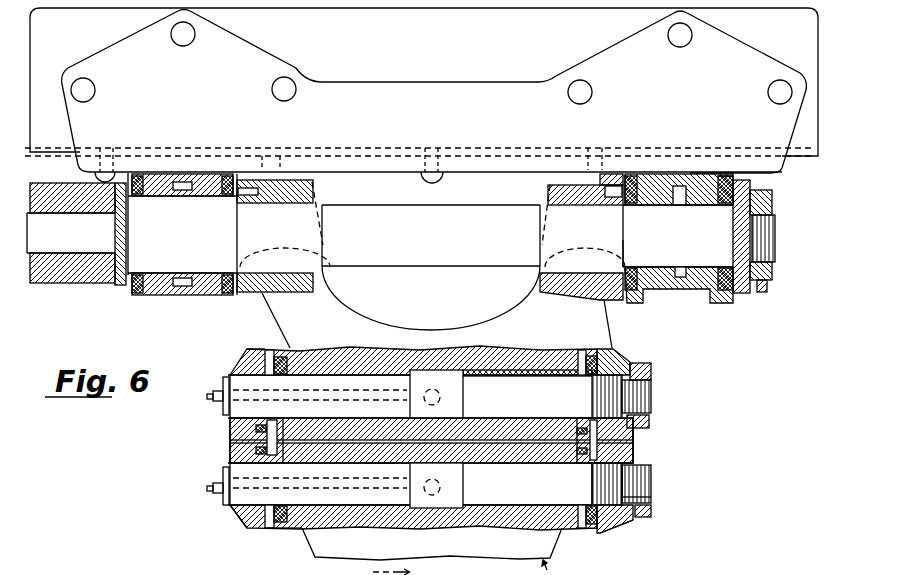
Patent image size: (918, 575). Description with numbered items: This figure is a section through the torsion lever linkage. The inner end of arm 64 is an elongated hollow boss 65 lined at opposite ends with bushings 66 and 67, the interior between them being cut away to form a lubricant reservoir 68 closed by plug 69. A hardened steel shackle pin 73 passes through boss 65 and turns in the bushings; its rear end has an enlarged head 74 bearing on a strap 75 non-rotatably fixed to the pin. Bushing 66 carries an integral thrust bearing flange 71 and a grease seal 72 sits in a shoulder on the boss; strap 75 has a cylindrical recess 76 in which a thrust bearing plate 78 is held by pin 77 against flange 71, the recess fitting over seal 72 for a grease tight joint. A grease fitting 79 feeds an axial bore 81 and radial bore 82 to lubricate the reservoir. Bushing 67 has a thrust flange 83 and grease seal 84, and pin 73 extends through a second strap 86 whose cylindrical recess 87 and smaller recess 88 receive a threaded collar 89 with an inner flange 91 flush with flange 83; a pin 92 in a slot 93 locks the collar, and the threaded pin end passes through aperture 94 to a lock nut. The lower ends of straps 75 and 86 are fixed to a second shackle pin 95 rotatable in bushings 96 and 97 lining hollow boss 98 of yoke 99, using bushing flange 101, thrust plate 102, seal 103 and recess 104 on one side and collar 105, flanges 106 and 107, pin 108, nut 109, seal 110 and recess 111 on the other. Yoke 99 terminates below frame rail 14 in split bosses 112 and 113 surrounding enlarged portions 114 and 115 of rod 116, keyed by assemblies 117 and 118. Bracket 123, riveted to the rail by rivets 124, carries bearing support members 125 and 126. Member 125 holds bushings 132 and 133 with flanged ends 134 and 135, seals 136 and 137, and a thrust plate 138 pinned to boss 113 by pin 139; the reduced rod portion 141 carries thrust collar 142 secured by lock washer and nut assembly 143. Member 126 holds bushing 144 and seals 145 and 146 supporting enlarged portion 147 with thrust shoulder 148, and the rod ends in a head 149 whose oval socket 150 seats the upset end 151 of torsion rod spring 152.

The frame rail 14 is at (806, 152).
The arm 64 is at (561, 567).
The hollow boss 65 is at (296, 526).
The bushing 66 is at (370, 460).
The bushing 67 is at (497, 463).
The lubricant reservoir 68 is at (447, 520).
The plug 69 is at (441, 488).
The thrust bearing flange 71 is at (281, 513).
The grease seal 72 is at (277, 529).
The shackle pin 73 is at (533, 490).
The head 74 is at (227, 468).
The strap 75 is at (248, 353).
The cylindrical recess 76 is at (260, 525).
The pin 77 is at (233, 438).
The thrust bearing plate 78 is at (277, 512).
The grease fitting 79 is at (215, 489).
The axial bore 81 is at (305, 478).
The radial bore 82 is at (440, 472).
The thrust flange 83 is at (602, 457).
The grease seal 84 is at (575, 523).
The strap 86 is at (637, 457).
The cylindrical recess 87 is at (593, 528).
The recess 88 is at (630, 527).
The collar 89 is at (633, 437).
The inner flange 91 is at (588, 473).
The pin 92 is at (657, 479).
The slot 93 is at (645, 470).
The aperture 94 is at (638, 497).
The second shackle pin 95 is at (460, 404).
The bushing 96 is at (344, 372).
The bushing 97 is at (528, 372).
The hollow boss 98 is at (508, 427).
The yoke 99 is at (413, 333).
The bushing flange 101 is at (278, 352).
The thrust plate 102 is at (266, 351).
The seal 103 is at (287, 352).
The internal recess 104 is at (272, 420).
The collar 105 is at (616, 368).
The flange 106 is at (586, 349).
The flange 107 is at (594, 349).
The pin 108 is at (650, 421).
The nut 109 is at (650, 372).
The seal 110 is at (583, 376).
The internal recess 111 is at (575, 437).
The split boss 112 is at (311, 188).
The split boss 113 is at (557, 188).
The enlarged portion 114 is at (325, 206).
The enlarged portion 115 is at (547, 205).
The rod 116 is at (426, 258).
The key and keyway assembly 117 is at (333, 273).
The key and keyway assembly 118 is at (541, 250).
The bracket 123 is at (493, 90).
The rivets 124 is at (95, 88).
The front bearing support member 125 is at (693, 289).
The rear bearing support member 126 is at (203, 294).
The bushing 132 is at (672, 207).
The bushing 133 is at (698, 210).
The flanged outer end 134 is at (645, 205).
The flanged outer end 135 is at (722, 194).
The grease seal annulus 136 is at (632, 174).
The grease seal annulus 137 is at (722, 174).
The thrust plate 138 is at (628, 258).
The pin 139 is at (613, 198).
The reduced portion 141 is at (774, 238).
The thrust collar 142 is at (749, 183).
The lock washer and nut assembly 143 is at (765, 277).
The bushing 144 is at (147, 294).
The grease seal 145 is at (230, 175).
The grease seal 146 is at (140, 175).
The enlarged cylindrical portion 147 is at (187, 246).
The thrust shoulder 148 is at (238, 196).
The head 149 is at (113, 284).
The oval socket 150 is at (68, 252).
The upset end 151 is at (102, 243).
The torsion rod spring 152 is at (28, 255).